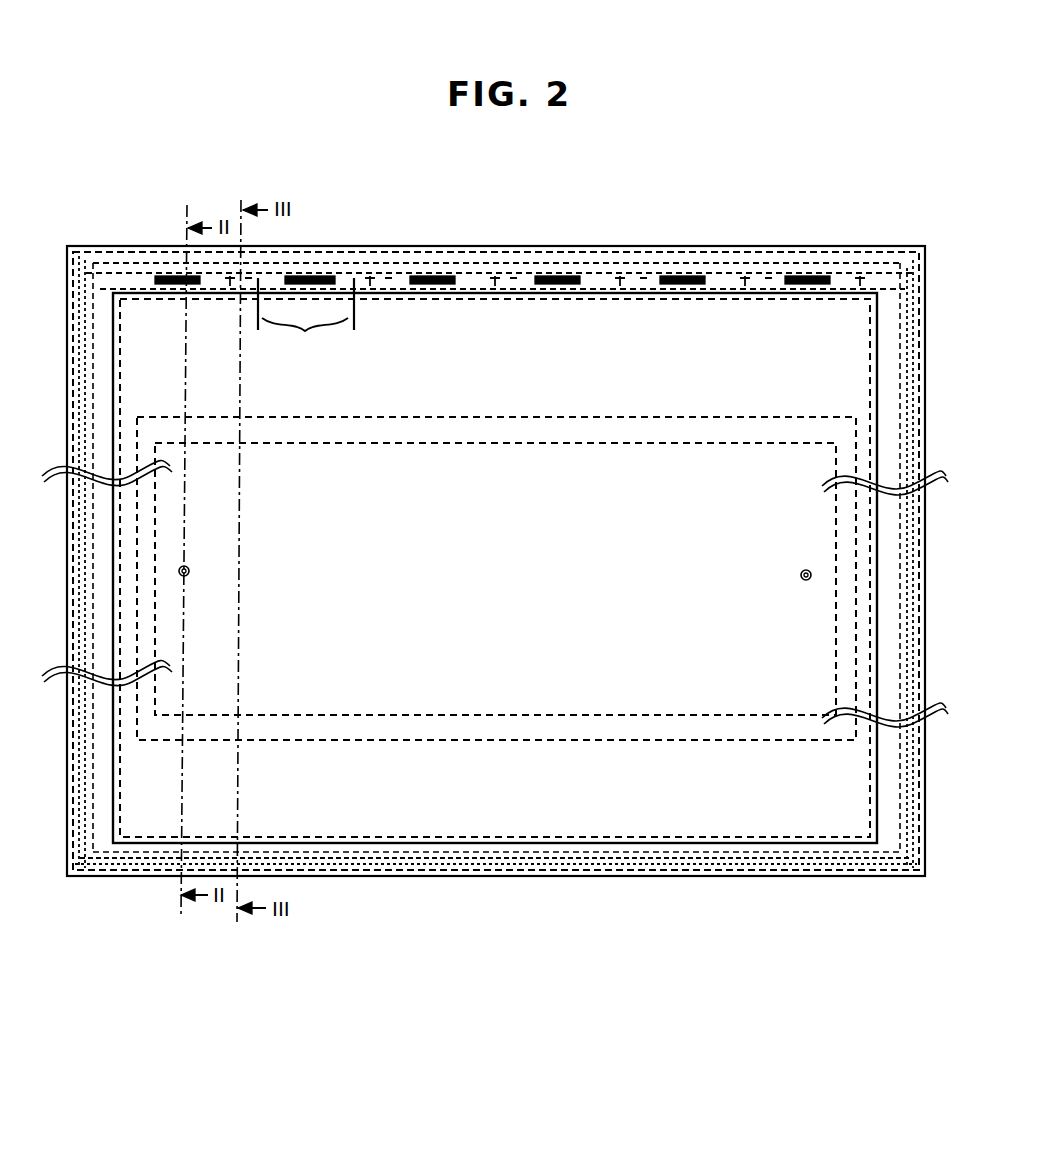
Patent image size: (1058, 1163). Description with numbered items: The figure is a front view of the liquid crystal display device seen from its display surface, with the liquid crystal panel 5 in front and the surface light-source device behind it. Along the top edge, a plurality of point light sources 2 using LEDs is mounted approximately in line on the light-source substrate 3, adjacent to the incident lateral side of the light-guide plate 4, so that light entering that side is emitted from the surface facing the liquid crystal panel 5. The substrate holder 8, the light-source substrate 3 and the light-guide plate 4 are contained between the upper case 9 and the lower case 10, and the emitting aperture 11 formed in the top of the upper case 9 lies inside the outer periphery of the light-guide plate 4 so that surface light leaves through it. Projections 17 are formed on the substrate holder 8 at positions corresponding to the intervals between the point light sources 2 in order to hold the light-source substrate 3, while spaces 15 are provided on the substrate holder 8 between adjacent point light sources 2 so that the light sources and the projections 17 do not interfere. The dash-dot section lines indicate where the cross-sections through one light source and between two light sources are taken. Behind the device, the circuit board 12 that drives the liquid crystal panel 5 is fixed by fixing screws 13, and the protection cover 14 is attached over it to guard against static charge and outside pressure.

The point light sources 2 is at (172, 274).
The light-source substrate 3 is at (600, 275).
The light-guide plate 4 is at (713, 290).
The liquid crystal panel 5 is at (864, 295).
The substrate holder 8 is at (110, 246).
The upper case 9 is at (380, 250).
The lower case 10 is at (430, 262).
The emitting aperture 11 is at (850, 830).
The circuit board 12 is at (257, 716).
The fixing screws 13 is at (190, 573).
The protection cover 14 is at (405, 741).
The spaces 15 is at (307, 336).
The projections 17 is at (497, 270).